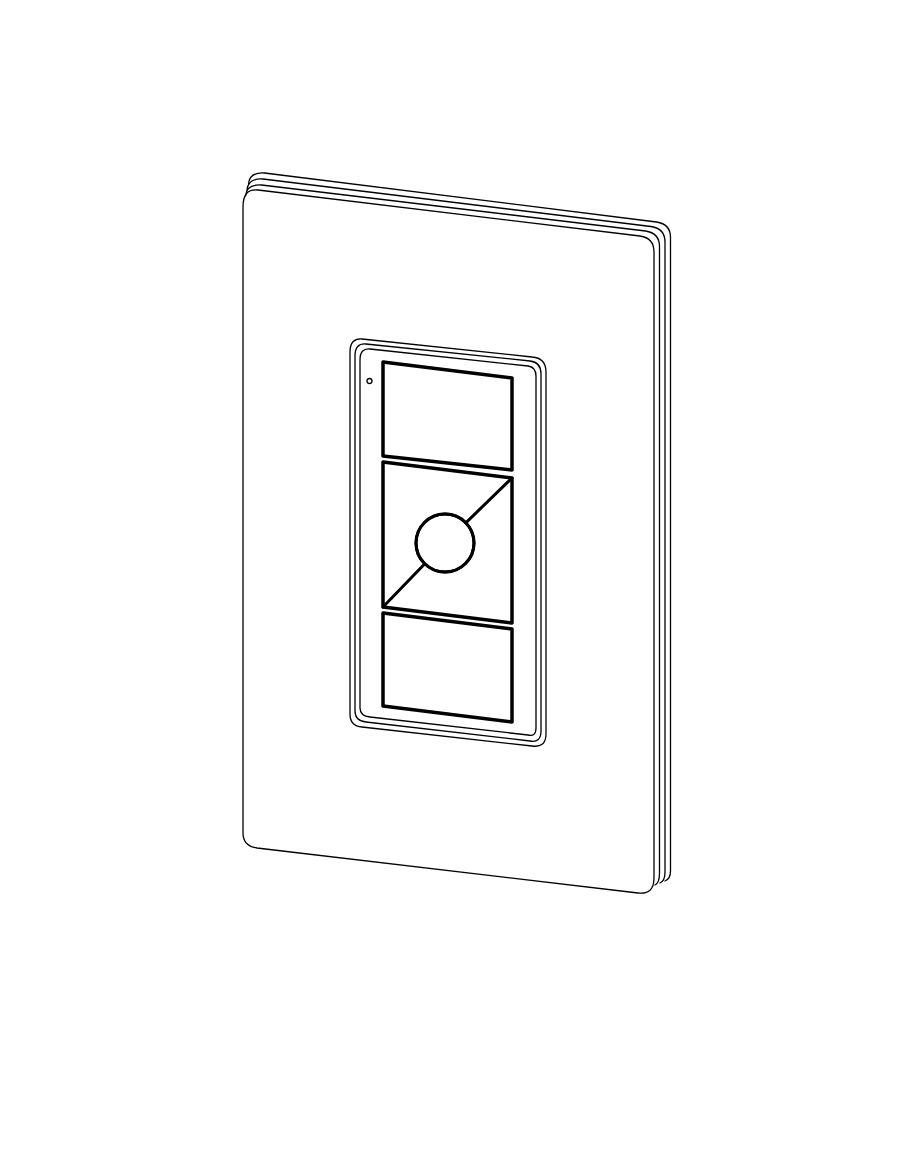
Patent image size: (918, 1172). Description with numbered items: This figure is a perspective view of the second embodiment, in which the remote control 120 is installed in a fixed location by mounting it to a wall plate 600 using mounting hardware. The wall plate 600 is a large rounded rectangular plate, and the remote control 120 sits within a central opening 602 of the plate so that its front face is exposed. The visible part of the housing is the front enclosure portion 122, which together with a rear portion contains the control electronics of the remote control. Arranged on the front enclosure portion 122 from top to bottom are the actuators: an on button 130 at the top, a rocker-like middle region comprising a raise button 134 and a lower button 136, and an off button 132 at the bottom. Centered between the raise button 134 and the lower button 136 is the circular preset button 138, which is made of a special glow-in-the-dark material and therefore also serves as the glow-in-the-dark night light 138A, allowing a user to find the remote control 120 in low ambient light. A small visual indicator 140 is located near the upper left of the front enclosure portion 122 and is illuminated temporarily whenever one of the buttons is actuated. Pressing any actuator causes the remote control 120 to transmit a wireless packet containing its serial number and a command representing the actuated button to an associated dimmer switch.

The remote control 120 is at (228, 117).
The front enclosure portion 122 is at (373, 651).
The on button 130 is at (455, 417).
The off button 132 is at (445, 668).
The raise button 134 is at (418, 492).
The lower button 136 is at (463, 586).
The preset button 138 is at (453, 548).
The glow-in-the-dark night light 138A is at (445, 543).
The visual indicator 140 is at (366, 381).
The wall plate 600 is at (581, 286).
The faceplate opening 602 is at (542, 437).